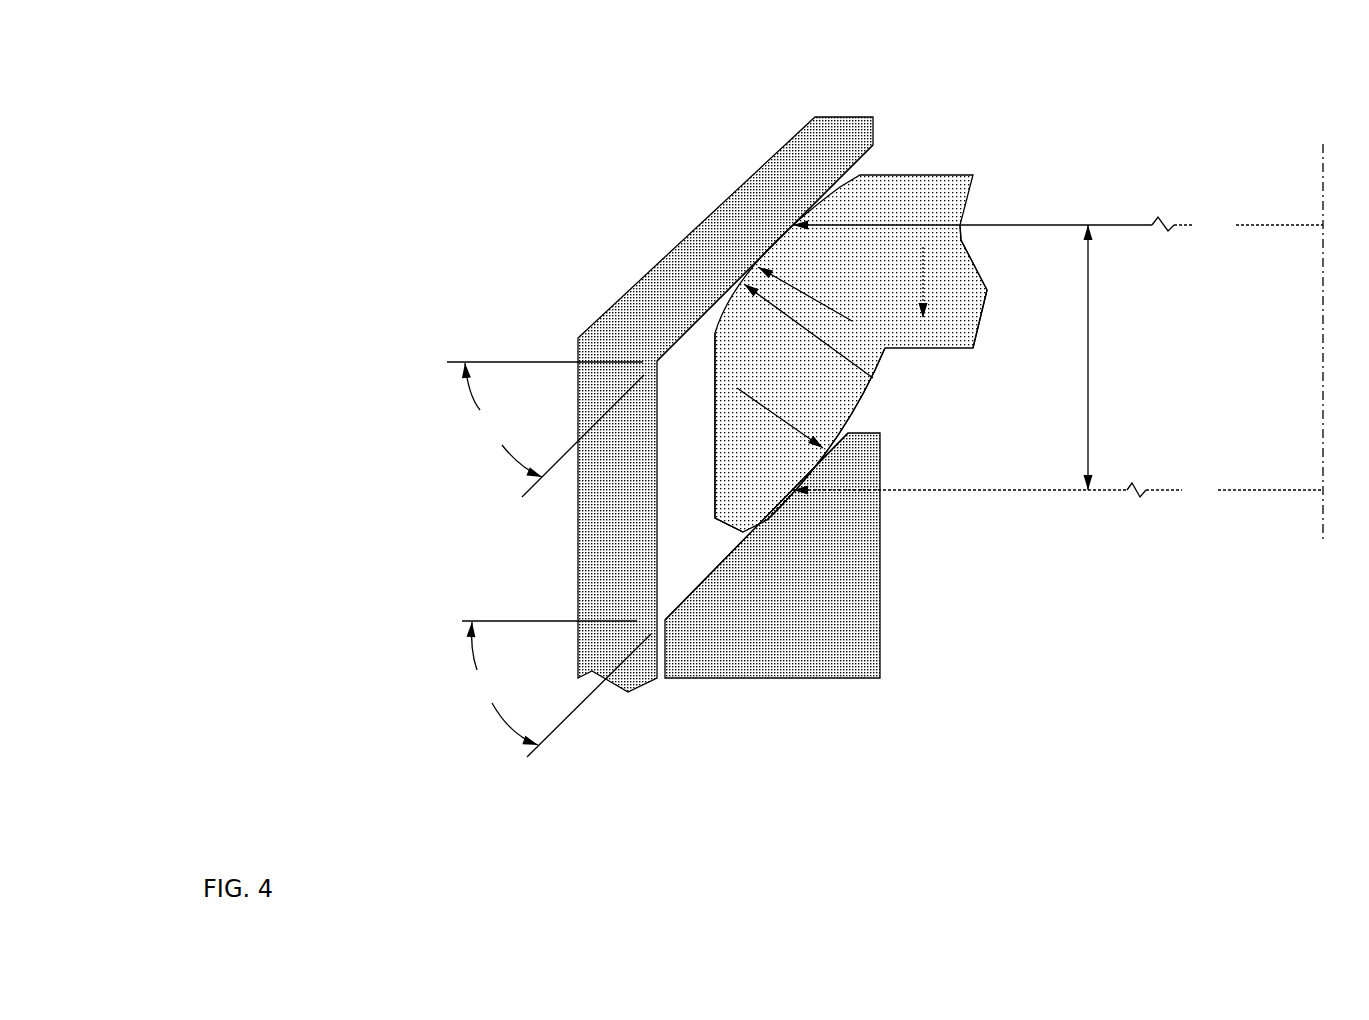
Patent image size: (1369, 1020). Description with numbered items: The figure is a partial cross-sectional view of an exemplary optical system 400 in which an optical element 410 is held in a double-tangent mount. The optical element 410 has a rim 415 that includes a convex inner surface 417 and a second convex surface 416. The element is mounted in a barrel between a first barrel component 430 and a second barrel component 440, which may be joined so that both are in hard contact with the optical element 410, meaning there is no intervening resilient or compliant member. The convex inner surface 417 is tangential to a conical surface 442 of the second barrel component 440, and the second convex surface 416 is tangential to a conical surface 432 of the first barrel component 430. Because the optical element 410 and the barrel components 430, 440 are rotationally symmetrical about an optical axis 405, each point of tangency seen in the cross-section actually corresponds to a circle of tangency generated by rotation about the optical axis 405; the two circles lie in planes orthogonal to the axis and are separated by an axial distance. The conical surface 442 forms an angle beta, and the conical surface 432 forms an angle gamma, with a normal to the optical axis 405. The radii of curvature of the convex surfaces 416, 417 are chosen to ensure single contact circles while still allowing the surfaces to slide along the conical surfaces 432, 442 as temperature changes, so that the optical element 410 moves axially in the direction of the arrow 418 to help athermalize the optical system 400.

The system 400 is at (405, 70).
The optical axis 405 is at (1324, 172).
The optical element 410 is at (918, 174).
The rim 415 is at (743, 490).
The second convex surface 416 is at (873, 378).
The convex inner surface 417 is at (852, 413).
The arrow 418 is at (923, 273).
The first barrel component 430 is at (700, 220).
The conical surface 432 is at (843, 172).
The second barrel component 440 is at (738, 678).
The conical surface 442 is at (730, 553).